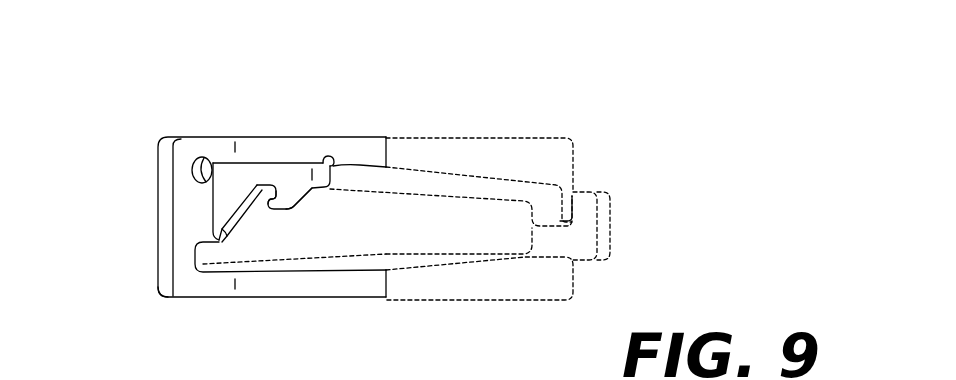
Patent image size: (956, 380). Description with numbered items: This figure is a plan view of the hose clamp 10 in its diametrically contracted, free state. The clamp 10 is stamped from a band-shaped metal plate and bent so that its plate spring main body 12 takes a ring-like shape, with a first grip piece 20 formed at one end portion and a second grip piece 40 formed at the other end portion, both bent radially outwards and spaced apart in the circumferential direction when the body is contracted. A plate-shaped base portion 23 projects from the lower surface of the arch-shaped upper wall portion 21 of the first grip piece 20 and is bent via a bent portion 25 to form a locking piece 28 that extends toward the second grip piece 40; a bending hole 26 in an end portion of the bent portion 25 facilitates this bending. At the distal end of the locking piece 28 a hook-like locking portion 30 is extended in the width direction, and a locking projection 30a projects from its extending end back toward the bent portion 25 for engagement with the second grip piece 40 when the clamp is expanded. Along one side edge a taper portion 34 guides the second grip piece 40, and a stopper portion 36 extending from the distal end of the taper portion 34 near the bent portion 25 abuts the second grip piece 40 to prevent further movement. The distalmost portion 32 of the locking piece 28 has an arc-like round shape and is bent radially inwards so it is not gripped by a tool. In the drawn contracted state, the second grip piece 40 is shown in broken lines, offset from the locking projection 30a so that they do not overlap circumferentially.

The clamp 10 is at (297, 190).
The plate spring main body 12 is at (278, 143).
The first grip piece 20 is at (140, 267).
The upper wall portion 21 is at (164, 282).
The base portion 23 is at (205, 208).
The bent portion 25 is at (208, 222).
The bending hole 26 is at (203, 158).
The locking piece 28 is at (298, 213).
The locking portion 30 is at (295, 185).
The locking projection 30a is at (275, 220).
The distalmost portion 32 is at (327, 157).
The taper portion 34 is at (252, 210).
The stopper portion 36 is at (219, 240).
The second grip piece 40 is at (612, 186).